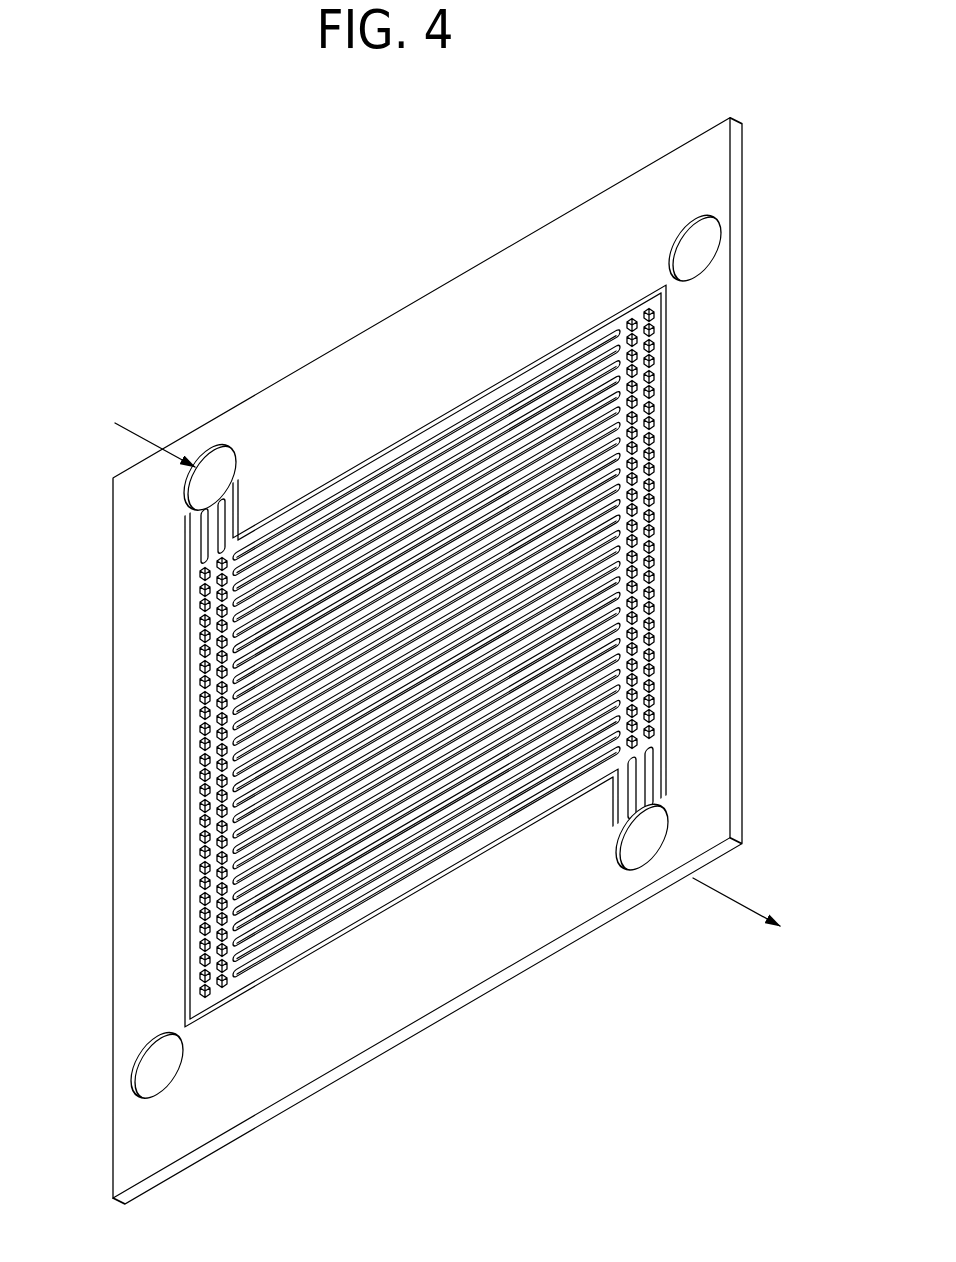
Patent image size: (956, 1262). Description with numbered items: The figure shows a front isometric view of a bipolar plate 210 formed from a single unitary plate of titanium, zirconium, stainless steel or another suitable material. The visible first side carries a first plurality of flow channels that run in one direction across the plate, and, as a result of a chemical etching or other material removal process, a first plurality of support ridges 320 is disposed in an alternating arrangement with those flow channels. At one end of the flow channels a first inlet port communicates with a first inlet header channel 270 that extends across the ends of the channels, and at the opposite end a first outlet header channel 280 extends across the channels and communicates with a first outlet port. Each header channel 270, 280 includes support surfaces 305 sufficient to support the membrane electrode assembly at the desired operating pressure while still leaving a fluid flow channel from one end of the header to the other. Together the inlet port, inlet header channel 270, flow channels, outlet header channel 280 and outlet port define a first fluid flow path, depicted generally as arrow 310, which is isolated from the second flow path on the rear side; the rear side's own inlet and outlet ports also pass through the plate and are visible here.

The bipolar plate 210 is at (193, 247).
The first inlet header channel 270 is at (193, 861).
The first outlet header channel 280 is at (651, 608).
The support surface 305 is at (648, 470).
The first fluid flow path 310 is at (137, 432).
The first plurality of support ridges 320 is at (420, 468).